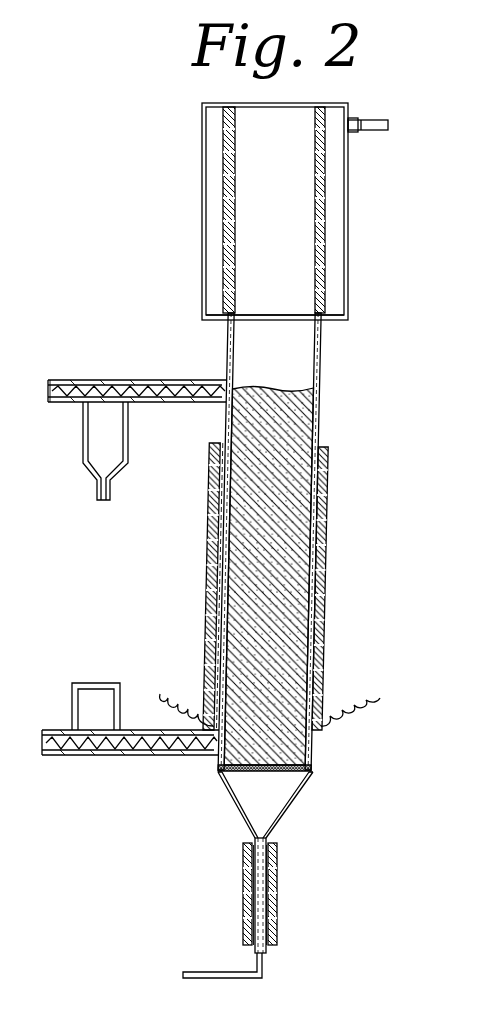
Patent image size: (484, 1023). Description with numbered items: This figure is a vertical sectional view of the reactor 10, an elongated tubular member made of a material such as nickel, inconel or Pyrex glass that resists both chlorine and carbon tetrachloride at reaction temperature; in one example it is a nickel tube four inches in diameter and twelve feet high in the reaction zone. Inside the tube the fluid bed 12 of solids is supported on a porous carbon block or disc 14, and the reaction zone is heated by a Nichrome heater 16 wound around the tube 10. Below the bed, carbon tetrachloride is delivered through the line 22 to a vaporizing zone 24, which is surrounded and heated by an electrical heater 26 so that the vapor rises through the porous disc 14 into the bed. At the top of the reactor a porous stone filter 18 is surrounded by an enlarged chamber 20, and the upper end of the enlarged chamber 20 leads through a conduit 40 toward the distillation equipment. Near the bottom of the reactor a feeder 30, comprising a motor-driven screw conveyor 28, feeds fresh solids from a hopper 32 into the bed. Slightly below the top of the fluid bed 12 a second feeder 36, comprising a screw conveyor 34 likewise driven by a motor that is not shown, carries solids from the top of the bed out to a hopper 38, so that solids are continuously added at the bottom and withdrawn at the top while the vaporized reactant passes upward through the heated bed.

The reactor 10 is at (318, 390).
The fluid bed 12 is at (286, 583).
The porous carbon block or disc 14 is at (288, 773).
The Nichrome heater 16 is at (325, 619).
The porous stone filter 18 is at (326, 272).
The enlarged chamber 20 is at (349, 228).
The line 22 is at (213, 979).
The vaporizing zone 24 is at (267, 922).
The electrical heater 26 is at (279, 896).
The screw conveyor 28 is at (108, 755).
The feeder 30 is at (150, 755).
The hopper 32 is at (72, 706).
The screw conveyor 34 is at (173, 399).
The second feeder 36 is at (125, 380).
The hopper 38 is at (129, 458).
The conduit 40 is at (380, 122).